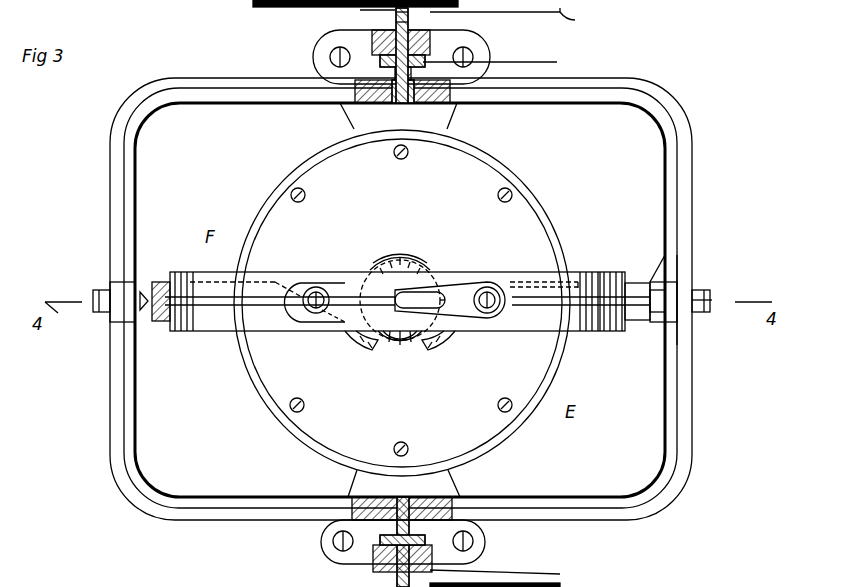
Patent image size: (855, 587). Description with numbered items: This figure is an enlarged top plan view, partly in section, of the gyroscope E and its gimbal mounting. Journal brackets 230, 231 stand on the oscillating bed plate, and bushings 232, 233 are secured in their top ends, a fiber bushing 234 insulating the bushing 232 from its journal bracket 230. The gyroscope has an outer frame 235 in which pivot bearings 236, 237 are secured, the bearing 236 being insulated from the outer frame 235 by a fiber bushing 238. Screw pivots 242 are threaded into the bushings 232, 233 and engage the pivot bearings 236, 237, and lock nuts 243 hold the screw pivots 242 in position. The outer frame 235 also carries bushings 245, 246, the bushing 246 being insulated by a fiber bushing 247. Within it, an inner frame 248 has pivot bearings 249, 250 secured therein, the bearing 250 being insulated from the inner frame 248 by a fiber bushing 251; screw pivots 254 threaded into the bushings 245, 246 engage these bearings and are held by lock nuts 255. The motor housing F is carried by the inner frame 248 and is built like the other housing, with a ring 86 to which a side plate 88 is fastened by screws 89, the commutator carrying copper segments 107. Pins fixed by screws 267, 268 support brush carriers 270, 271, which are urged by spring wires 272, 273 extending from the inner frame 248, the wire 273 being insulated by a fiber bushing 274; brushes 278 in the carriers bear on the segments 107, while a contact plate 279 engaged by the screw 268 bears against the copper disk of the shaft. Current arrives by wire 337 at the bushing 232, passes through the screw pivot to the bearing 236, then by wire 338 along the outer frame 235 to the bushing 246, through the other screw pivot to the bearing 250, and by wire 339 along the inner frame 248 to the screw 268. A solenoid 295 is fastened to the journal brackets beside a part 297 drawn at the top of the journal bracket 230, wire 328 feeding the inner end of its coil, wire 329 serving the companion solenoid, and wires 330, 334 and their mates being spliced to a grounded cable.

The ring 86 is at (248, 380).
The side plate 88 is at (465, 273).
The screws 89 is at (305, 198).
The copper segments 107 is at (398, 262).
The journal bracket 230 is at (328, 46).
The journal bracket 231 is at (318, 548).
The bushing 232 is at (393, 68).
The bushing 233 is at (378, 565).
The fiber bushing 234 is at (432, 38).
The outer frame 235 is at (692, 168).
The pivot bearing 236 is at (398, 104).
The pivot bearing 237 is at (398, 494).
The fiber bushing 238 is at (419, 104).
The screw pivots 242 is at (395, 14).
The lock nuts 243 is at (458, 20).
The bushing 245 is at (145, 322).
The bushing 246 is at (678, 338).
The fiber bushing 247 is at (712, 335).
The inner frame 248 is at (268, 331).
The pivot bearing 249 is at (162, 280).
The pivot bearing 250 is at (664, 345).
The fiber bushing 251 is at (598, 262).
The screw pivots 254 is at (100, 290).
The lock nuts 255 is at (110, 322).
The screw 267 is at (312, 287).
The screw 268 is at (498, 290).
The brush carrier 270 is at (365, 350).
The brush carrier 271 is at (432, 350).
The spring wire 272 is at (193, 280).
The spring wire 273 is at (598, 282).
The fiber bushing 274 is at (545, 282).
The brushes 278 is at (400, 348).
The contact plate 279 is at (450, 300).
The solenoid 295 is at (358, 11).
The washer 297 is at (382, 48).
The wire 328 is at (584, 26).
The wire 329 is at (562, 585).
The wire 330 is at (255, 5).
The lower washer 334 is at (337, 561).
The wire 337 is at (557, 62).
The wire 338 is at (665, 164).
The wire 339 is at (615, 332).